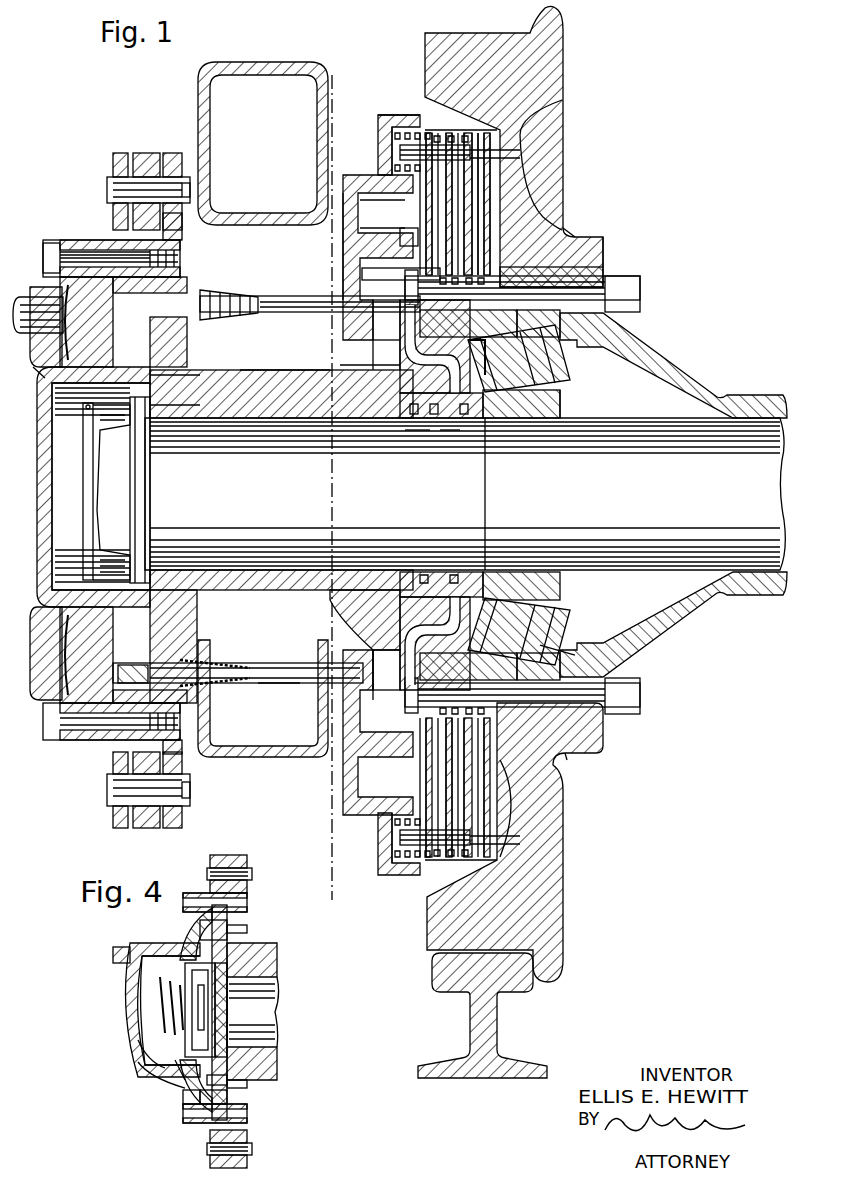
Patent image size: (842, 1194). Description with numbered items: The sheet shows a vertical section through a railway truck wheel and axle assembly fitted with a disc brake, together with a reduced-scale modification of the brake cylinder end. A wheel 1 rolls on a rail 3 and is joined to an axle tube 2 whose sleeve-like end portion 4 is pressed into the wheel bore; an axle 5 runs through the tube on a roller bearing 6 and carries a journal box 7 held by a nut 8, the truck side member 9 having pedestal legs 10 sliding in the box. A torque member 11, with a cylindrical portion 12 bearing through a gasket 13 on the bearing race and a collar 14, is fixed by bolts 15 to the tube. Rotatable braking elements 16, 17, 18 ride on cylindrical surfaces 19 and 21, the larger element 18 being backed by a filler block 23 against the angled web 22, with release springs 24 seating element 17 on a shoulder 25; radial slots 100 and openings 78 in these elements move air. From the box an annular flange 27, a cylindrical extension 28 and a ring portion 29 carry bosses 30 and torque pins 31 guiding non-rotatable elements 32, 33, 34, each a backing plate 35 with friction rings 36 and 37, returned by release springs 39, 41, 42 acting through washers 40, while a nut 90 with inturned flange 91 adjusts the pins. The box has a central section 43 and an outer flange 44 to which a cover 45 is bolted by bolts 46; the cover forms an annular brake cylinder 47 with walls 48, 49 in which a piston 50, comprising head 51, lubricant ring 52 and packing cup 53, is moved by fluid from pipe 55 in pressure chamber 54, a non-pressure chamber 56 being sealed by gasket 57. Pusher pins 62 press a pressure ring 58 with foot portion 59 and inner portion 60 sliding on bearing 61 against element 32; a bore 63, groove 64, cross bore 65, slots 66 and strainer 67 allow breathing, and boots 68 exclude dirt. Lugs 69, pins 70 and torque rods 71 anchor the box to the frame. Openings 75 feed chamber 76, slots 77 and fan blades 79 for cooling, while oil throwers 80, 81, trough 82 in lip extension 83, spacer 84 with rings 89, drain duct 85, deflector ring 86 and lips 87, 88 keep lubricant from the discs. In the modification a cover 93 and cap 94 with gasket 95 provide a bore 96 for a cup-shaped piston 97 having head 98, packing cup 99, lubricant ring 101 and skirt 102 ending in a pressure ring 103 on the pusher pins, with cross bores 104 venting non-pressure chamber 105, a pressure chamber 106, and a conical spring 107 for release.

In FIG. 1, the wheel 1 is at (548, 62).
In FIG. 1, the axle tube 2 is at (352, 70).
In FIG. 1, the rail 3 is at (500, 1020).
In FIG. 1, the sleeve-like end portion 4 is at (590, 277).
In FIG. 1, the axle 5 is at (733, 417).
In FIG. 1, the roller bearing 6 is at (575, 343).
In FIG. 1, the journal box 7 is at (242, 370).
In FIG. 4, the journal box 7 is at (262, 958).
In FIG. 1, the nut 8 is at (100, 537).
In FIG. 1, the side member 9 is at (200, 85).
In FIG. 1, the pedestal leg 10 is at (255, 225).
In FIG. 1, the torque member 11 is at (480, 660).
In FIG. 1, the cylindrical portion 12 is at (532, 645).
In FIG. 1, the washer or gasket 13 is at (540, 318).
In FIG. 1, the collar 14 is at (420, 312).
In FIG. 1, the bolt 15 is at (638, 286).
In FIG. 1, the rotatable friction braking element 16 is at (520, 188).
In FIG. 1, the rotatable friction braking element 17 is at (515, 208).
In FIG. 1, the rotatable friction braking element 18 is at (567, 236).
In FIG. 1, the cylindrical surface 19 is at (532, 758).
In FIG. 1, the cylindrical surface 21 is at (565, 746).
In FIG. 1, the web 22 is at (520, 142).
In FIG. 1, the filler block 23 is at (515, 162).
In FIG. 1, the brake release spring 24 is at (410, 703).
In FIG. 1, the shoulder 25 is at (438, 366).
In FIG. 1, the annular flange 27 is at (343, 250).
In FIG. 1, the cylindrical extension 28 is at (360, 178).
In FIG. 1, the ring portion 29 is at (398, 128).
In FIG. 1, the cylindrical boss 30 is at (455, 127).
In FIG. 1, the torque pin 31 is at (448, 130).
In FIG. 1, the non-rotatable friction braking element 32 is at (400, 203).
In FIG. 1, the non-rotatable friction braking element 33 is at (400, 218).
In FIG. 1, the non-rotatable friction braking element 34 is at (565, 132).
In FIG. 1, the backing plate 35 is at (407, 235).
In FIG. 1, the friction braking ring 36 is at (408, 270).
In FIG. 1, the friction braking ring 37 is at (603, 240).
In FIG. 1, the brake release spring 39 is at (418, 130).
In FIG. 1, the washer 40 is at (400, 150).
In FIG. 1, the brake release spring 41 is at (472, 130).
In FIG. 1, the brake release spring 42 is at (436, 125).
In FIG. 1, the central journal and guide section 43 is at (272, 370).
In FIG. 1, the flange 44 is at (183, 236).
In FIG. 4, the flange 44 is at (228, 905).
In FIG. 1, the cover 45 is at (38, 463).
In FIG. 1, the bolt 46 is at (52, 240).
In FIG. 4, the bolt 46 is at (200, 895).
In FIG. 1, the brake cylinder 47 is at (85, 395).
In FIG. 1, the inside cylindrical wall 48 is at (86, 322).
In FIG. 1, the outside cylindrical wall 49 is at (81, 322).
In FIG. 1, the piston 50 is at (42, 362).
In FIG. 1, the piston head 51 is at (78, 260).
In FIG. 1, the lubricant carrying ring 52 is at (110, 260).
In FIG. 1, the packing cup 53 is at (43, 250).
In FIG. 1, the pressure chamber 54 is at (42, 380).
In FIG. 1, the pipe 55 is at (22, 300).
In FIG. 4, the pipe 55 is at (113, 953).
In FIG. 1, the non-pressure chamber 56 is at (175, 380).
In FIG. 1, the ring gasket 57 is at (175, 407).
In FIG. 1, the pressure ring 58 is at (343, 278).
In FIG. 1, the foot-like portion 59 is at (343, 238).
In FIG. 1, the inner annular portion 60 is at (335, 314).
In FIG. 1, the cylindrical bearing 61 is at (358, 355).
In FIG. 1, the pusher pin 62 is at (250, 292).
In FIG. 4, the pusher pin 62 is at (240, 925).
In FIG. 1, the axial bore 63 is at (270, 663).
In FIG. 4, the axial bore 63 is at (190, 1108).
In FIG. 1, the annular groove 64 is at (86, 655).
In FIG. 1, the cross bore 65 is at (290, 685).
In FIG. 1, the slot 66 is at (81, 655).
In FIG. 1, the air strainer 67 is at (133, 665).
In FIG. 4, the air strainer 67 is at (227, 1097).
In FIG. 1, the flexible boot 68 is at (225, 660).
In FIG. 1, the lug 69 is at (171, 153).
In FIG. 1, the pin 70 is at (108, 187).
In FIG. 4, the pin 70 is at (208, 868).
In FIG. 1, the torque rod 71 is at (150, 153).
In FIG. 4, the torque rod 71 is at (248, 861).
In FIG. 1, the opening 75 is at (345, 363).
In FIG. 1, the chamber 76 is at (387, 355).
In FIG. 1, the slot 77 is at (487, 357).
In FIG. 1, the opening 78 is at (420, 315).
In FIG. 1, the fan blade 79 is at (385, 675).
In FIG. 1, the oil thrower 80 is at (521, 495).
In FIG. 1, the oil thrower 81 is at (434, 418).
In FIG. 1, the trough-like chamber 82 is at (410, 432).
In FIG. 1, the lip-like extension 83 is at (443, 432).
In FIG. 1, the spacer 84 is at (414, 418).
In FIG. 1, the drain duct 85 is at (350, 625).
In FIG. 1, the deflector ring 86 is at (550, 405).
In FIG. 1, the lip 87 is at (466, 418).
In FIG. 1, the lip 88 is at (440, 572).
In FIG. 1, the ring 89 is at (448, 572).
In FIG. 1, the nut 90 is at (380, 118).
In FIG. 1, the inturned annular flange 91 is at (380, 140).
In FIG. 4, the cover 93 is at (170, 1082).
In FIG. 4, the cap 94 is at (215, 1000).
In FIG. 4, the resilient gasket 95 is at (260, 950).
In FIG. 4, the brake cylinder bore 96 is at (175, 948).
In FIG. 4, the brake cylinder piston 97 is at (134, 1000).
In FIG. 4, the piston head 98 is at (145, 1078).
In FIG. 4, the packing cup 99 is at (136, 968).
In FIG. 1, the slot 100 is at (500, 232).
In FIG. 4, the lubricant ring 101 is at (150, 945).
In FIG. 4, the skirt 102 is at (180, 1082).
In FIG. 4, the pressure ring 103 is at (247, 1079).
In FIG. 4, the cross bore 104 is at (247, 930).
In FIG. 4, the non-pressure chamber 105 is at (206, 1033).
In FIG. 4, the pressure chamber 106 is at (136, 1056).
In FIG. 4, the conical spring 107 is at (165, 1005).